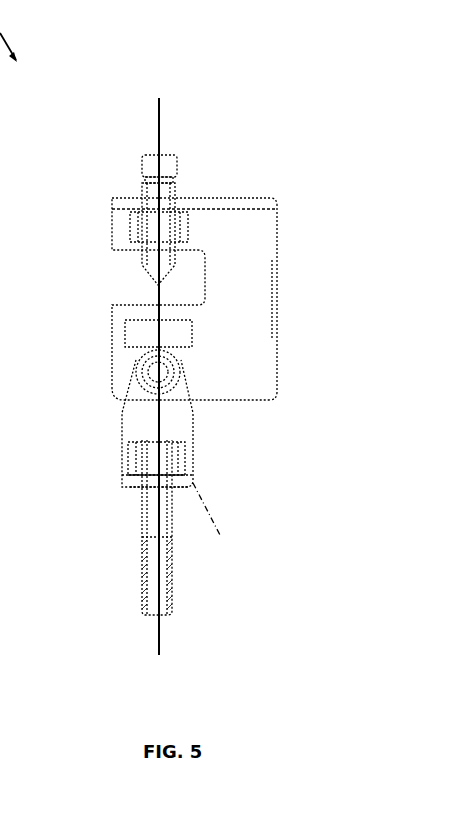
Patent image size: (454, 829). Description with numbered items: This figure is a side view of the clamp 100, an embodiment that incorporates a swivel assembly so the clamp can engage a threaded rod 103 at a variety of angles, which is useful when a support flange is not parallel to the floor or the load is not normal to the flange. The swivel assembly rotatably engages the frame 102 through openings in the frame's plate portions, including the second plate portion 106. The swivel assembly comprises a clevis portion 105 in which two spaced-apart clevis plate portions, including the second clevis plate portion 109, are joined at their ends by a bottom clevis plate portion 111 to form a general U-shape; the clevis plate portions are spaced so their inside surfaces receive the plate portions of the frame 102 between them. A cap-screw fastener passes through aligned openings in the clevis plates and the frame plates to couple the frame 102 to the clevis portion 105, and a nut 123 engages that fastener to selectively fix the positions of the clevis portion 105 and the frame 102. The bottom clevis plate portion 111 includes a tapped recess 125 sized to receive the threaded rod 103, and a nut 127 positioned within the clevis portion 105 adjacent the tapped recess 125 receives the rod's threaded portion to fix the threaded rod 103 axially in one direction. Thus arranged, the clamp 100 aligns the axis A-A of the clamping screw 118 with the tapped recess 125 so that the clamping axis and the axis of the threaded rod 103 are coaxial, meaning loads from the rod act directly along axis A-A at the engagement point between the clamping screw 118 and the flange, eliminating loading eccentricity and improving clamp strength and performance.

The clamp 100 is at (266, 499).
The frame 102 is at (304, 210).
The threaded rod 103 is at (167, 560).
The clevis portion 105 is at (228, 528).
The second plate portion 106 is at (265, 307).
The second clevis plate portion 109 is at (182, 427).
The bottom clevis plate portion 111 is at (130, 485).
The clamping screw 118 is at (163, 182).
The nut 123 is at (136, 379).
The tapped recess 125 is at (140, 482).
The nut 127 is at (133, 458).